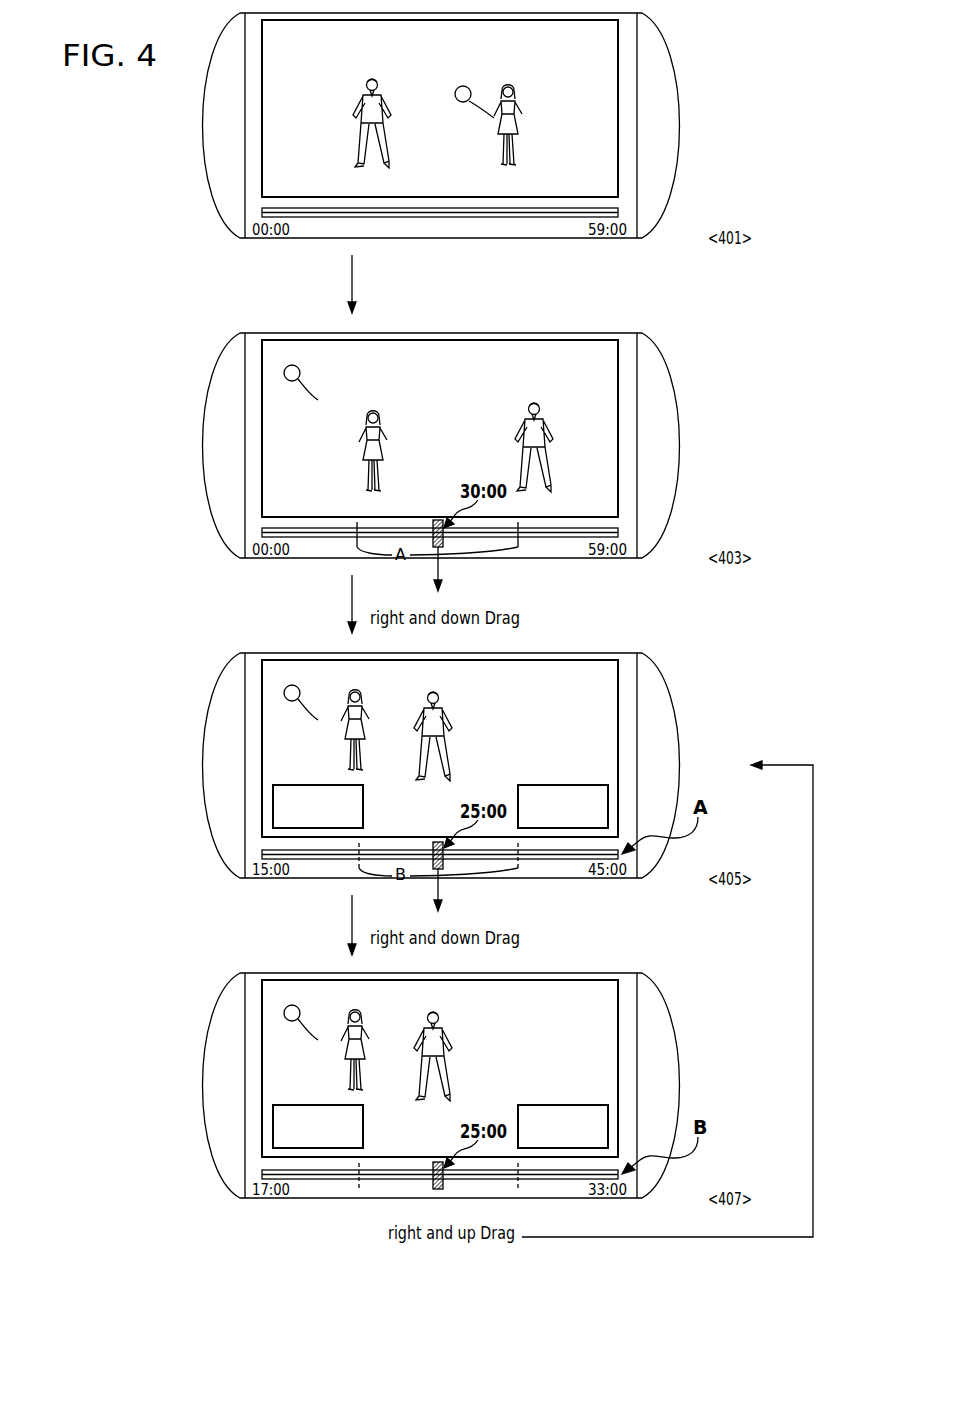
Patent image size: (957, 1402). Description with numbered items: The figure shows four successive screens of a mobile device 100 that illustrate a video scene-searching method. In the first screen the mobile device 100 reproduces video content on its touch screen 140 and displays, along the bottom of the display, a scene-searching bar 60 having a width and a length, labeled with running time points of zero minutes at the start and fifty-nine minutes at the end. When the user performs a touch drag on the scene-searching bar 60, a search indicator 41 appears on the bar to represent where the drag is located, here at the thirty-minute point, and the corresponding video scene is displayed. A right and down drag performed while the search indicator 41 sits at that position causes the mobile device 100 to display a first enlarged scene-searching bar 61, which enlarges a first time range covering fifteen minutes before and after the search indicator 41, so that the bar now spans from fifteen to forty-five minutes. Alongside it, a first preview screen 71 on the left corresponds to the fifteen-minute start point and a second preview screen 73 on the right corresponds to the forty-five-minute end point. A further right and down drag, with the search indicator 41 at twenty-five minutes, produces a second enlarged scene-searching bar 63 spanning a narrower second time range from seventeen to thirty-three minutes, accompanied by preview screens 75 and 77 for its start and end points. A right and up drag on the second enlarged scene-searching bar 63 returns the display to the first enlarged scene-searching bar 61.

The mobile device 100 is at (702, 107).
The touch screen 140 is at (603, 43).
The scene-searching bar 60 is at (540, 226).
The search indicator 41 is at (437, 519).
The first enlarged scene-searching bar 61 is at (548, 870).
The second enlarged scene-searching bar 63 is at (331, 1190).
The first preview screen 71 is at (300, 786).
The second preview screen 73 is at (578, 785).
The preview screen 75 is at (300, 1106).
The preview screen 77 is at (578, 1105).